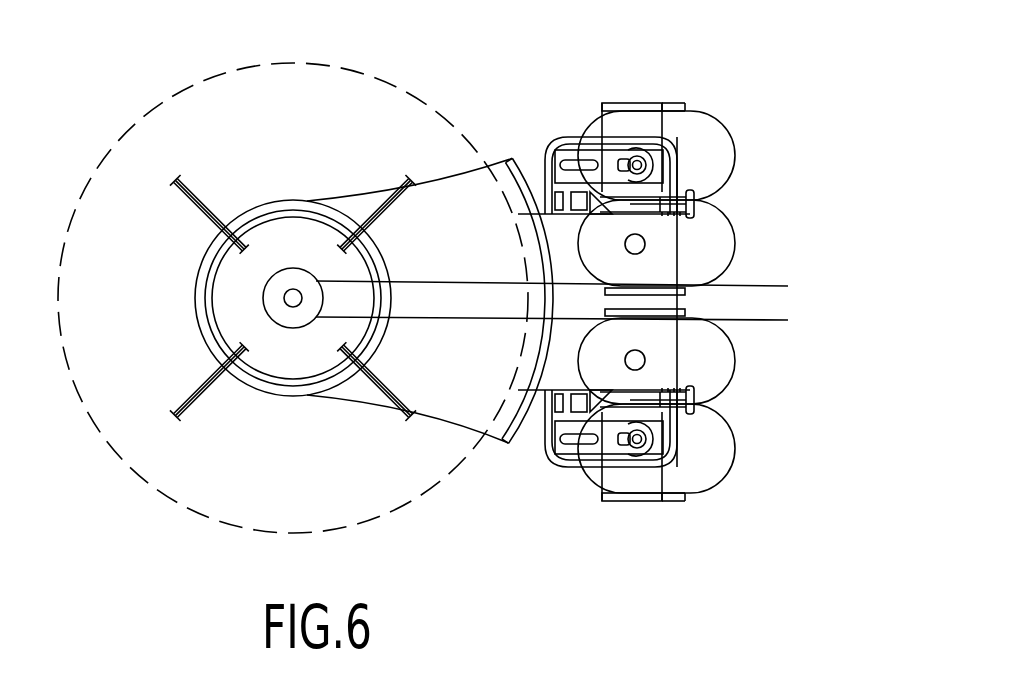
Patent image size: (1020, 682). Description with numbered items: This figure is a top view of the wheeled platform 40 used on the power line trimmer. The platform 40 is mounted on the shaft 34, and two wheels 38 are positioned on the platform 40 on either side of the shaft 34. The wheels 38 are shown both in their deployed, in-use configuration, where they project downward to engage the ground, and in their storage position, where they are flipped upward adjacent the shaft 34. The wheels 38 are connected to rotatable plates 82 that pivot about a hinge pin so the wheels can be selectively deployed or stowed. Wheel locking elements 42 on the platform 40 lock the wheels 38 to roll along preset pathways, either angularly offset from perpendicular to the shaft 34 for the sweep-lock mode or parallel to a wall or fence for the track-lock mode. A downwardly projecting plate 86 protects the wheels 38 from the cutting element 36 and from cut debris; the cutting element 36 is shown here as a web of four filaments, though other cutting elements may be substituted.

The shaft 34 is at (766, 285).
The cutting element 36 is at (182, 186).
The wheels 38 is at (729, 222).
The platform 40 is at (471, 170).
The wheel locking elements 42 is at (567, 163).
The rotatable plates 82 is at (547, 155).
The downwardly projecting plate 86 is at (487, 453).